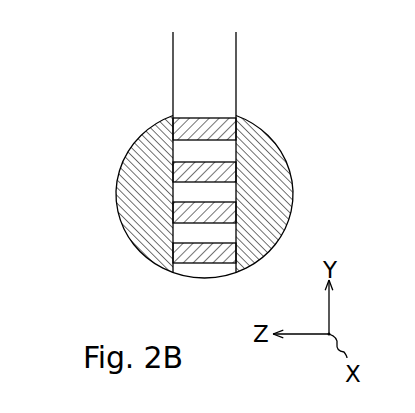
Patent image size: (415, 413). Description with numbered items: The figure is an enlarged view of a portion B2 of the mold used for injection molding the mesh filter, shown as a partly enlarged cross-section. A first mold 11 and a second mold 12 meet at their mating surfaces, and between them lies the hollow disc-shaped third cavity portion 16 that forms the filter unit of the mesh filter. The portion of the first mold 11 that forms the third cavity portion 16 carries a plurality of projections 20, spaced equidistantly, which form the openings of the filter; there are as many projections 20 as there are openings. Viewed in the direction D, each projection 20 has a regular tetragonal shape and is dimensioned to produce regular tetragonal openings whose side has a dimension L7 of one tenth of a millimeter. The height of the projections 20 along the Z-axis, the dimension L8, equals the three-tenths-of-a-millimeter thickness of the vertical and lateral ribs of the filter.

The first mold 11 is at (275, 170).
The second mold 12 is at (143, 225).
The third cavity portion 16 is at (222, 111).
The projections 20 is at (205, 118).
The portion B2 is at (140, 128).
The direction D is at (73, 183).
The dimension L7 is at (205, 223).
The dimension L8 is at (277, 42).